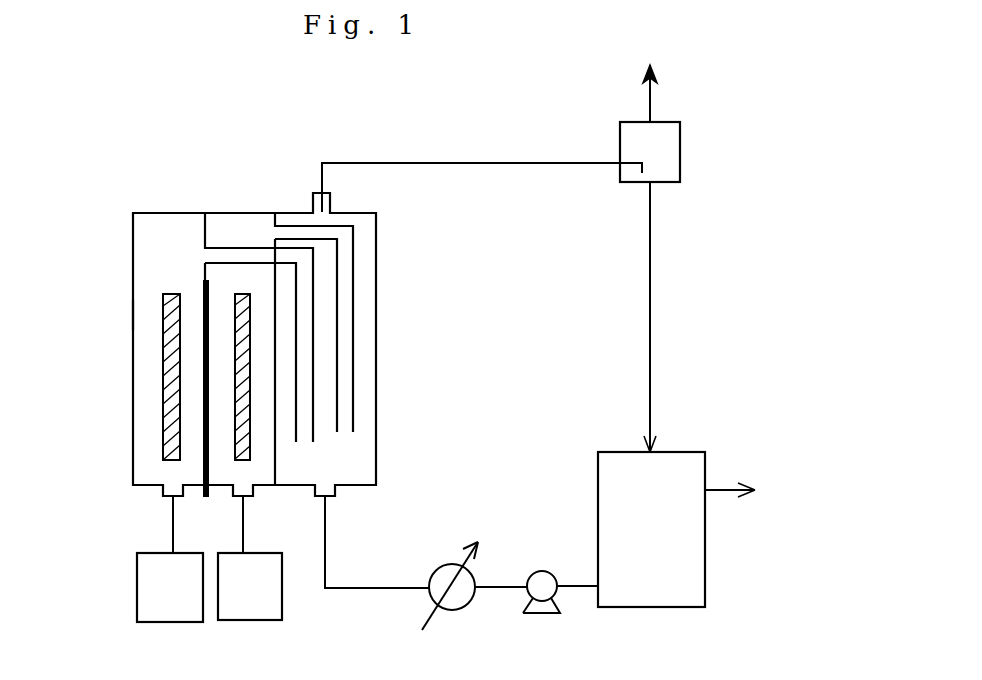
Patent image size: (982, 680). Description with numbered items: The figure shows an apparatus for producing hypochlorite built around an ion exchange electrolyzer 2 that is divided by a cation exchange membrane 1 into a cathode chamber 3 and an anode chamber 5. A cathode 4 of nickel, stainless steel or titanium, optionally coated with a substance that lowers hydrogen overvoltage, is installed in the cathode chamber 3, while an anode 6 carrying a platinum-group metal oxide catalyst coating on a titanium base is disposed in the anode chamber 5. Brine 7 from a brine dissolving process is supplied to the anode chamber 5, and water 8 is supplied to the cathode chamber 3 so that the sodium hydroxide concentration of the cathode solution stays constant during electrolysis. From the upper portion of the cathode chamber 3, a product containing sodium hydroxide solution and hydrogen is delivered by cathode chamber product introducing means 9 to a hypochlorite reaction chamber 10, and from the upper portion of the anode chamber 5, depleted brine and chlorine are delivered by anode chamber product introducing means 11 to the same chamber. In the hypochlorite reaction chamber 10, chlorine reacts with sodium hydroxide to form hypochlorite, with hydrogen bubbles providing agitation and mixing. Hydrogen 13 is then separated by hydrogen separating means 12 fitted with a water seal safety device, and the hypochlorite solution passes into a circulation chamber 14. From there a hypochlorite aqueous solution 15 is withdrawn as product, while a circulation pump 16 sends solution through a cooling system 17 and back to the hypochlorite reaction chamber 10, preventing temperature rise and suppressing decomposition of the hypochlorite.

The cation exchange membrane 1 is at (197, 455).
The ion exchange electrolyzer 2 is at (115, 250).
The cathode chamber 3 is at (140, 310).
The cathode 4 is at (163, 393).
The anode chamber 5 is at (263, 450).
The anode 6 is at (240, 457).
The brine 7 is at (250, 558).
The water 8 is at (170, 559).
The cathode chamber product introducing means 9 is at (255, 257).
The hypochlorite reaction chamber 10 is at (365, 335).
The anode chamber product introducing means 11 is at (347, 263).
The hydrogen separating means 12 is at (637, 142).
The hydrogen 13 is at (660, 102).
The circulation chamber 14 is at (651, 394).
The hypochlorite aqueous solution 15 is at (737, 502).
The circulation pump 16 is at (540, 613).
The cooling system 17 is at (445, 567).